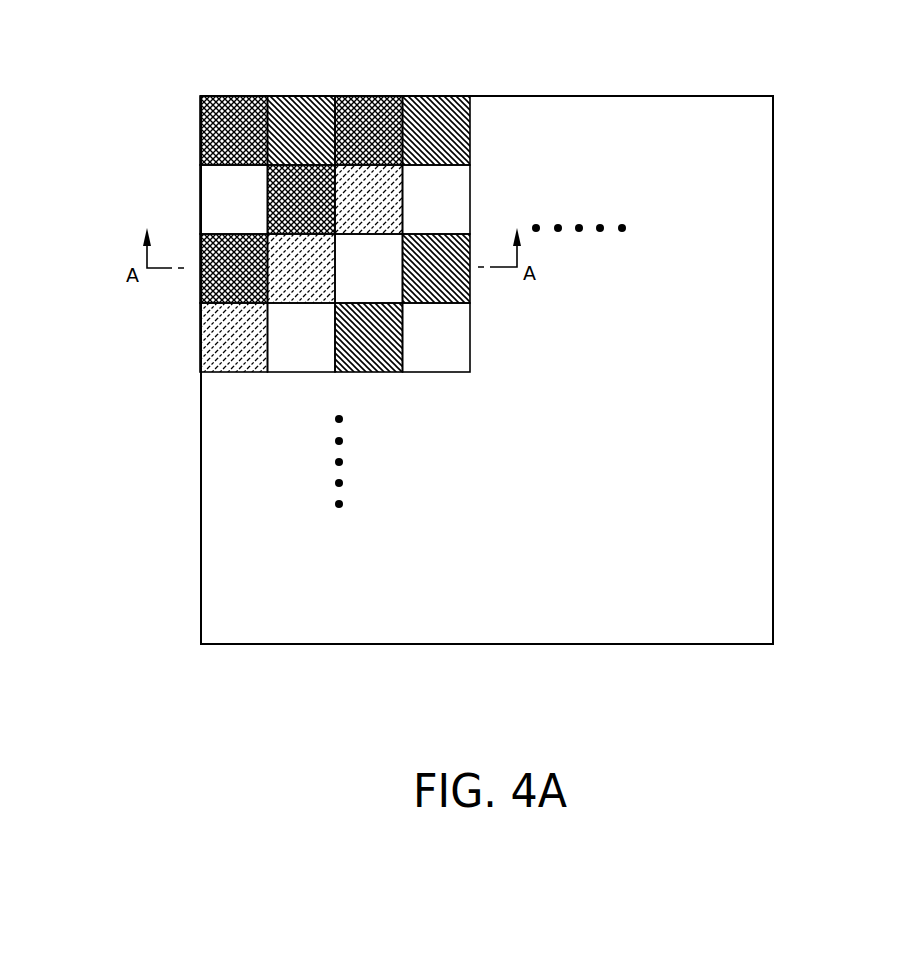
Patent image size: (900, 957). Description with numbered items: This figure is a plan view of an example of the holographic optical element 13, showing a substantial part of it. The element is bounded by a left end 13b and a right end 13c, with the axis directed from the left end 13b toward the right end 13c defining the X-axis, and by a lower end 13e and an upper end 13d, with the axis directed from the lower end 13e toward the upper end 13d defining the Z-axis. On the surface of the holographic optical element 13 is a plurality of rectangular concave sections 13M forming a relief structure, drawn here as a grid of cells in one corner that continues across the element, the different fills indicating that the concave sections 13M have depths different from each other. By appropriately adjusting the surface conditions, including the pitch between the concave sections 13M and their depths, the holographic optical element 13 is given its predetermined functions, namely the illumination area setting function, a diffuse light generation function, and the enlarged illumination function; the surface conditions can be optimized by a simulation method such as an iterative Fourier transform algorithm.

The holographic optical element 13 is at (623, 629).
The left end 13b is at (200, 490).
The right end 13c is at (758, 439).
The upper end 13d is at (568, 96).
The lower end 13e is at (395, 644).
The concave sections 13M is at (385, 282).